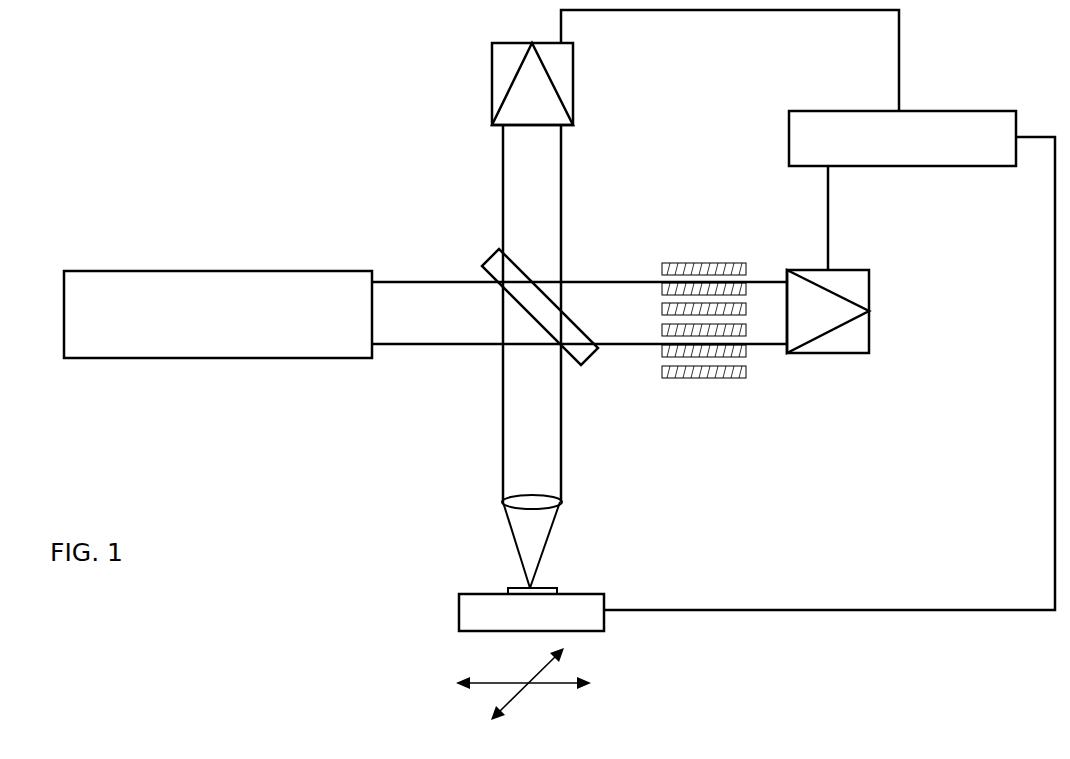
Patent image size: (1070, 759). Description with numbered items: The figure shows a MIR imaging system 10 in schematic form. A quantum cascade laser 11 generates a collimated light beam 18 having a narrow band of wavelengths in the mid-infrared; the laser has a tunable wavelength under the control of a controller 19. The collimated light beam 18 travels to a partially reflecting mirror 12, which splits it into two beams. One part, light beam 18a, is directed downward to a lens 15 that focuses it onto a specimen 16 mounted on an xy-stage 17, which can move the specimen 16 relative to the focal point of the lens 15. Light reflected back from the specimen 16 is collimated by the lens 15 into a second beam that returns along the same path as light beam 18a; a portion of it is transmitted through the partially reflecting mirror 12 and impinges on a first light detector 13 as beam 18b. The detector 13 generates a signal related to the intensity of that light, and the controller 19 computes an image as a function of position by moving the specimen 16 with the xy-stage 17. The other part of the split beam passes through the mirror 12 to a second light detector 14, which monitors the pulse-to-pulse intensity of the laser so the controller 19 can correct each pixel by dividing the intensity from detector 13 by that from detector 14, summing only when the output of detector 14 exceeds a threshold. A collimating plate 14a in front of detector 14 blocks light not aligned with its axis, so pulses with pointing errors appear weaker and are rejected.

The imaging system 10 is at (212, 146).
The quantum cascade laser 11 is at (215, 358).
The partially reflecting mirror 12 is at (580, 365).
The first light detector 13 is at (573, 85).
The second light detector 14 is at (868, 335).
The collimating plate 14a is at (680, 262).
The lens 15 is at (546, 505).
The specimen 16 is at (515, 588).
The xy-stage 17 is at (463, 606).
The collimated light beam 18 is at (420, 284).
The light beam 18a is at (508, 407).
The beam 18b is at (553, 193).
The controller 19 is at (946, 168).